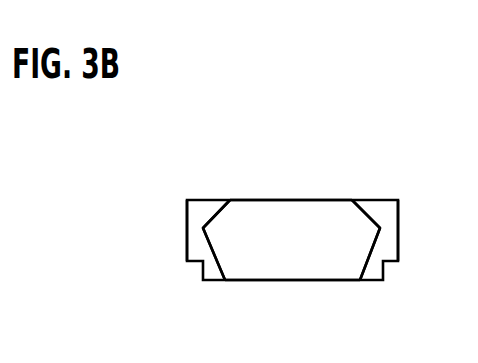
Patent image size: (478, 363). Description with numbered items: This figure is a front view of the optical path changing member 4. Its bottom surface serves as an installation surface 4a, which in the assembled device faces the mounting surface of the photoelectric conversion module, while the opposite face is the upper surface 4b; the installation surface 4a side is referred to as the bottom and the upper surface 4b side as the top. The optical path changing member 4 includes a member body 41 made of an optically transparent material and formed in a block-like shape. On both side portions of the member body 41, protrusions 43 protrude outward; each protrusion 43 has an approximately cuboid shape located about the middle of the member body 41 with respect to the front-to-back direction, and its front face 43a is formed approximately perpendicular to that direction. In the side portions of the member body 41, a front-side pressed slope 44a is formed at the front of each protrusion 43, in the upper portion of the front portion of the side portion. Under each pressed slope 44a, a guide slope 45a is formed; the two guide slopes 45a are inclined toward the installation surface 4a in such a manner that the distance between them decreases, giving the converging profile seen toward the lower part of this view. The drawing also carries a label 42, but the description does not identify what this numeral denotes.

The optical path changing member 4 is at (396, 181).
The installation surface 4a is at (293, 280).
The upper surface 4b is at (325, 200).
The member body 41 is at (270, 200).
The side portion 42 is at (398, 221).
The protrusion 43 is at (187, 207).
The front face 43a is at (193, 232).
The front-side pressed slope 44a is at (213, 200).
The guide slope 45a is at (202, 247).